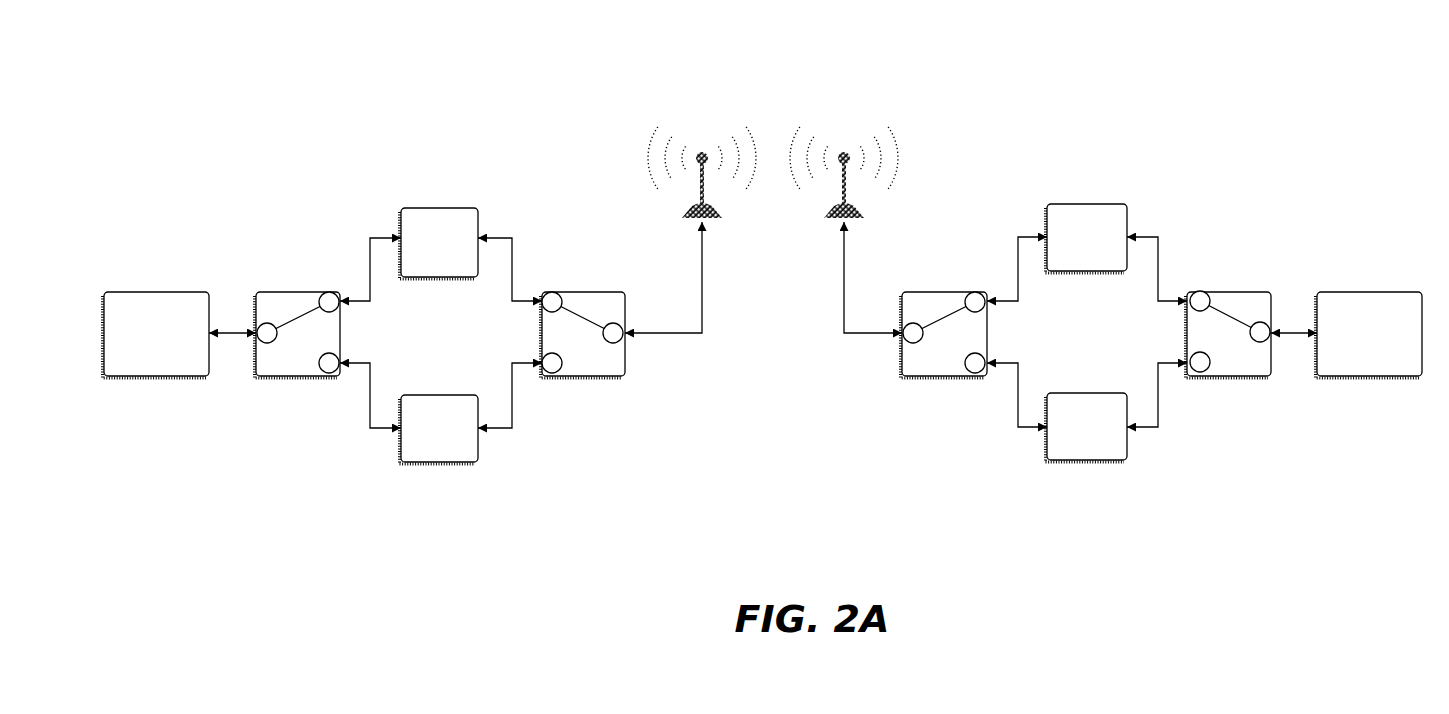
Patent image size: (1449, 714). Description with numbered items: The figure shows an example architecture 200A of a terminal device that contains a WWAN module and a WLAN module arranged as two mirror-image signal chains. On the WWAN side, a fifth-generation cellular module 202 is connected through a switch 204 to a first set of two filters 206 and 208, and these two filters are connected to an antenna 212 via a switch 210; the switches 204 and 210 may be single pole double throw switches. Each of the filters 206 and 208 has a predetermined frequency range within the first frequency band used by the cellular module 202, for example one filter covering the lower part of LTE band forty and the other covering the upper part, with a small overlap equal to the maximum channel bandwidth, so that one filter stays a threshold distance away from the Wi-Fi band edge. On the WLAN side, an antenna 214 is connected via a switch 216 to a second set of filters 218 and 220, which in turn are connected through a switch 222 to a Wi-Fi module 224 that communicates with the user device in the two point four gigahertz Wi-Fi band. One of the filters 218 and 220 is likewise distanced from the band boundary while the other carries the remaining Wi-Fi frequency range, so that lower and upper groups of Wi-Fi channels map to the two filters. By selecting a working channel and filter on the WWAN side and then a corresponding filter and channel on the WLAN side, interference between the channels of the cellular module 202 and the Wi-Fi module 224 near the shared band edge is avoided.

The architecture 200A is at (349, 60).
The 5G module 202 is at (168, 292).
The switch 204 is at (302, 292).
The filter 206 is at (450, 208).
The filter 208 is at (448, 395).
The switch 210 is at (594, 292).
The antenna 212 is at (722, 118).
The antenna 214 is at (857, 118).
The switch 216 is at (937, 292).
The filter 218 is at (1103, 204).
The filter 220 is at (1104, 393).
The switch 222 is at (1233, 292).
The Wi-Fi module 224 is at (1384, 292).